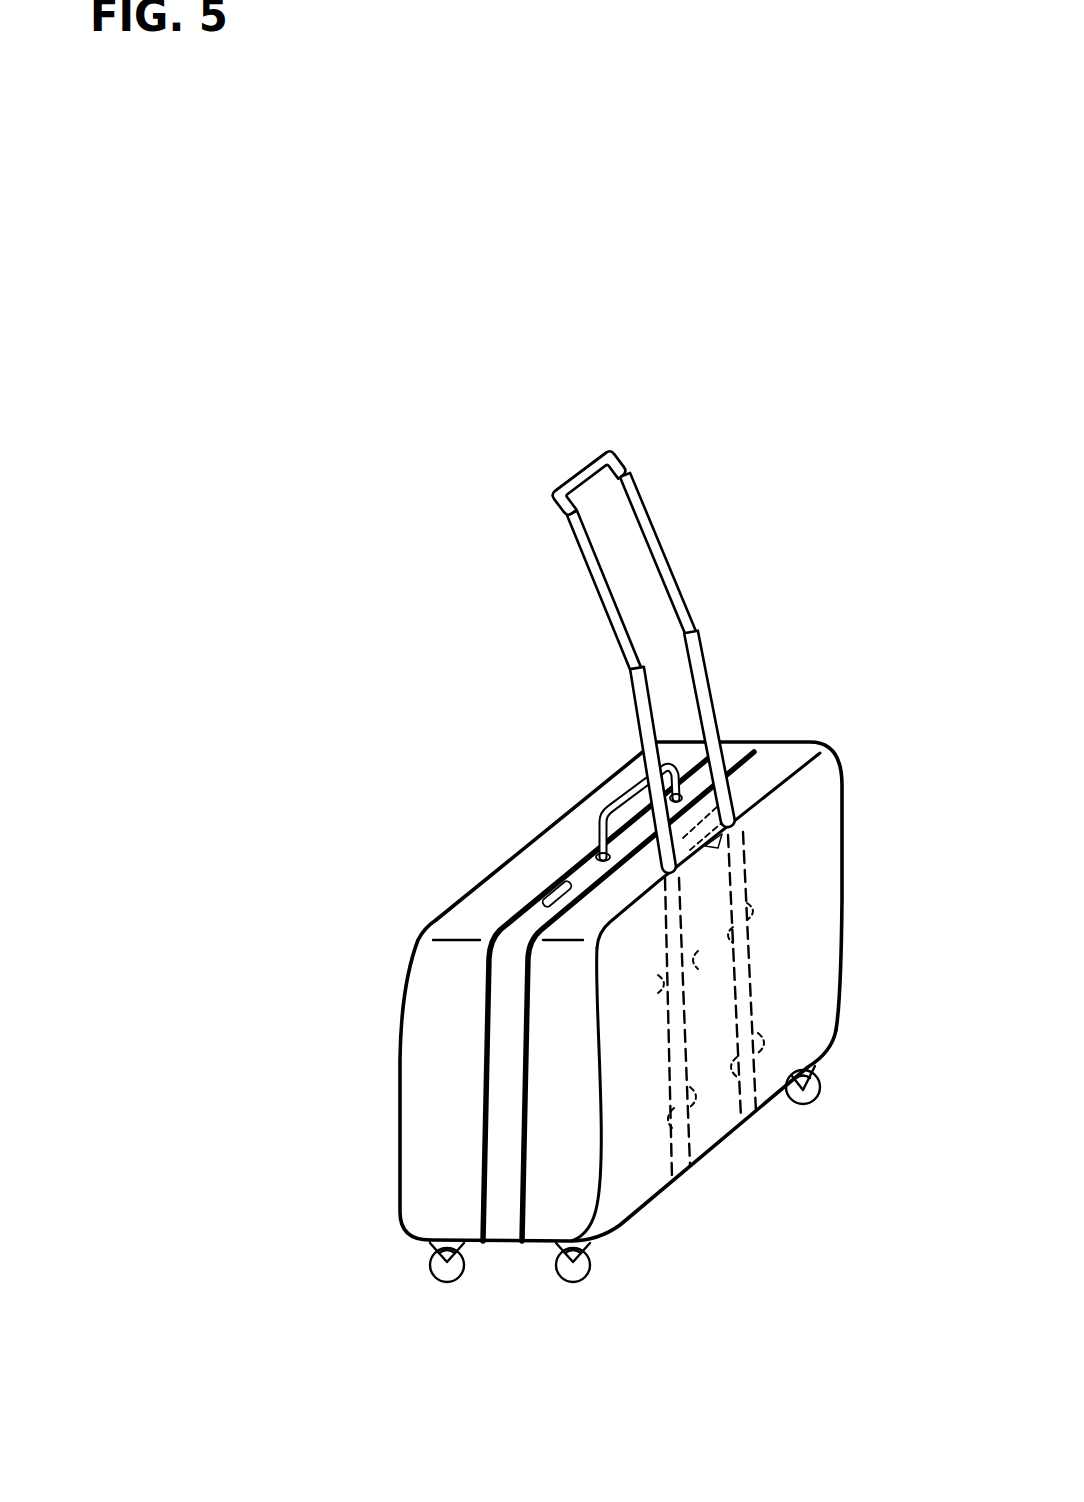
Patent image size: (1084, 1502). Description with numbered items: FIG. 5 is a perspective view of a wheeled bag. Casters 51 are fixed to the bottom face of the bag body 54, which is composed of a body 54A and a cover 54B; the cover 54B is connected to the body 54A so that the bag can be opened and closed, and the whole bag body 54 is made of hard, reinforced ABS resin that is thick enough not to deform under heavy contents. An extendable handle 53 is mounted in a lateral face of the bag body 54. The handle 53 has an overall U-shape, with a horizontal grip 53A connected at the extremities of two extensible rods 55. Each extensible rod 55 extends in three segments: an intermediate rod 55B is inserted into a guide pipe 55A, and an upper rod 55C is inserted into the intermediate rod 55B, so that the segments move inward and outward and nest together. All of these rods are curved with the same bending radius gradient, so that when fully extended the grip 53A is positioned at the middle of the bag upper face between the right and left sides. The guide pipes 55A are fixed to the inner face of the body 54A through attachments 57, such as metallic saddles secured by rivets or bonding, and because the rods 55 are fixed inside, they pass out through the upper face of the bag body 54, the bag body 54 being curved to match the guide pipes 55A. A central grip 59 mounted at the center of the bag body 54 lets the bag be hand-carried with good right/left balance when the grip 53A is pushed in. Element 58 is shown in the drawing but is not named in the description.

The casters 51 is at (447, 1285).
The extendable handle 53 is at (562, 439).
The horizontal grip 53A is at (573, 486).
The bag body 54 is at (561, 1006).
The body 54A is at (622, 1197).
The cover 54B is at (418, 1096).
The extensible rods 55 is at (699, 825).
The guide pipes 55A is at (743, 980).
The intermediate rods 55B is at (706, 697).
The upper rods 55C is at (660, 547).
The attachments 57 is at (795, 1038).
The lock mechanism 58 is at (717, 840).
The central grip 59 is at (617, 810).